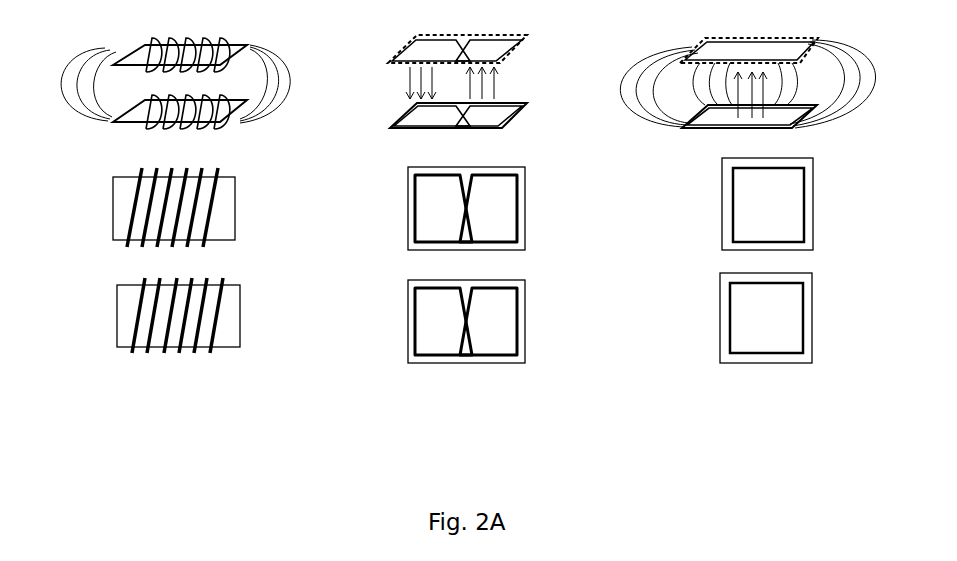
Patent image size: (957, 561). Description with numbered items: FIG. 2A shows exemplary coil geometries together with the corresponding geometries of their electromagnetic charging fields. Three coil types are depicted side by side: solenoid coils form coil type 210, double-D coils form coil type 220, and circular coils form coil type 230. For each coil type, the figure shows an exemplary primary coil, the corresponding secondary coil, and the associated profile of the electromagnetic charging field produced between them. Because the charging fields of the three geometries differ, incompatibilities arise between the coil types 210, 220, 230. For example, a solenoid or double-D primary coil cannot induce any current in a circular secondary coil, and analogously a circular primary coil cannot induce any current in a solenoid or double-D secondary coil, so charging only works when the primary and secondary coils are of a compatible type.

The coil type (solenoid coils) 210 is at (201, 235).
The coil type (double-D coils) 220 is at (431, 238).
The coil type (circular coils) 230 is at (718, 239).